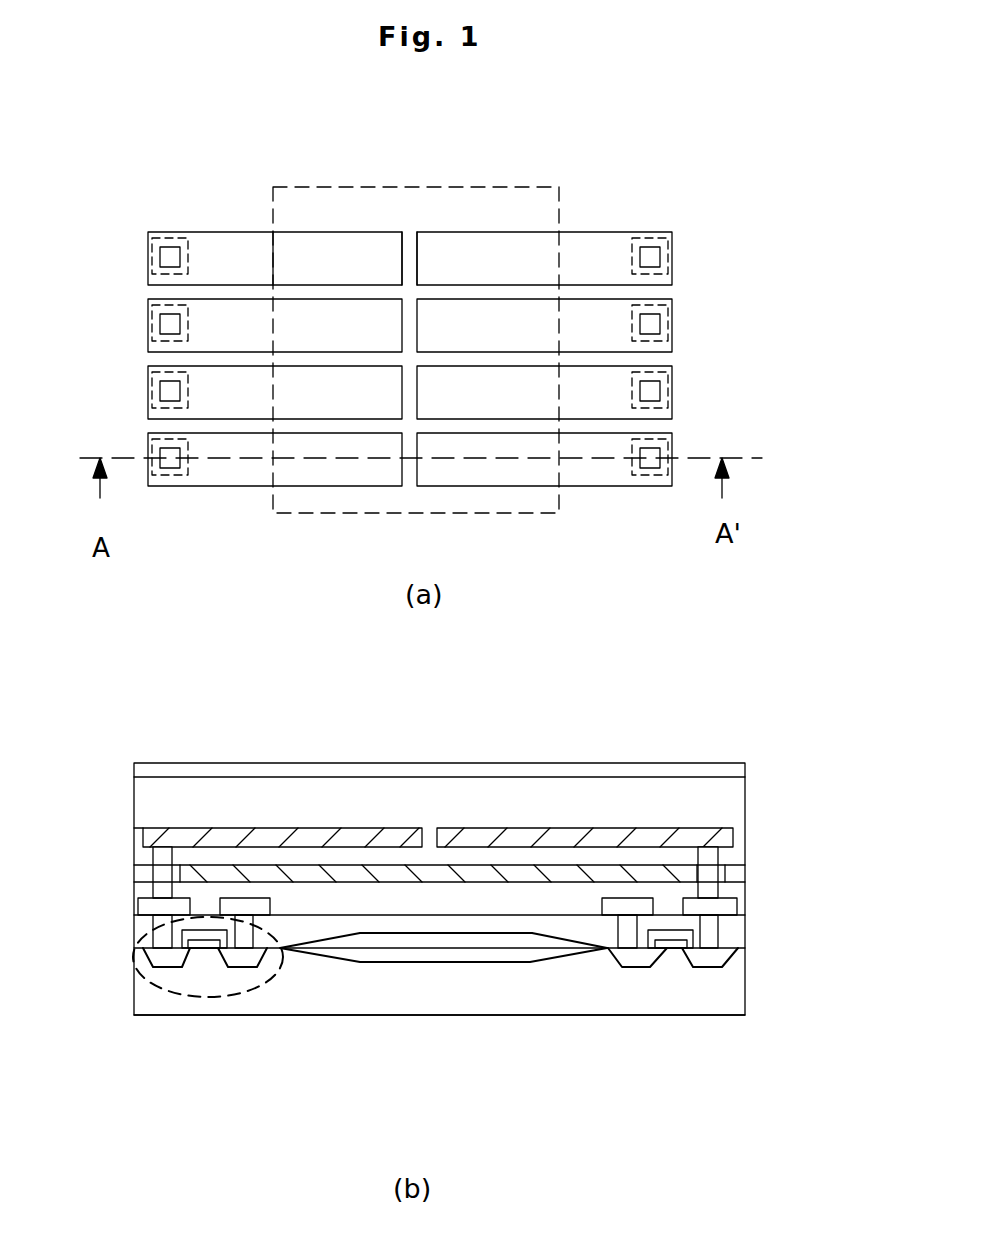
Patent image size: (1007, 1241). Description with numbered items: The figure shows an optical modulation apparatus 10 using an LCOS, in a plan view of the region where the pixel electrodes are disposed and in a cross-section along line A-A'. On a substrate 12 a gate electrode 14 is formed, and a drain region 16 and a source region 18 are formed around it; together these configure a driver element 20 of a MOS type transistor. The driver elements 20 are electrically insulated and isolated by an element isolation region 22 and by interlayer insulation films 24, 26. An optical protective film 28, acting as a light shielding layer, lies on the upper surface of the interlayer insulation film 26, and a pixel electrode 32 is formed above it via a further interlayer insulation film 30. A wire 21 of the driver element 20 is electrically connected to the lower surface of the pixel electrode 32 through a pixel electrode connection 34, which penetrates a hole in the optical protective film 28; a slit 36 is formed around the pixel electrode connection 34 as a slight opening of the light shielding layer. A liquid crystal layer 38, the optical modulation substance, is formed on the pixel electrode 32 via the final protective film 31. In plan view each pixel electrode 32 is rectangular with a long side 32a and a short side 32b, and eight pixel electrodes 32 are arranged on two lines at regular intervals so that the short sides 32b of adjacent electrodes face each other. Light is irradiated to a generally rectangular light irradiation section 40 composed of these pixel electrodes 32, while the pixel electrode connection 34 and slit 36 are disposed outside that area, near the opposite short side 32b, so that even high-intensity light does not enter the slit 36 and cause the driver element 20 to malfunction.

The optical modulation apparatus 10 is at (690, 144).
The substrate 12 is at (547, 993).
The gate electrode 14 is at (207, 942).
The drain region 16 is at (237, 960).
The source region 18 is at (168, 958).
The driver element 20 is at (188, 1012).
The wire 21 is at (152, 905).
The element isolation region 22 is at (457, 950).
The interlayer insulation film 24 is at (413, 925).
The interlayer insulation film 26 is at (357, 900).
The optical protective film 28 is at (362, 877).
The interlayer insulation film 30 is at (295, 857).
The final protective film 31 is at (715, 802).
The pixel electrode 32 is at (227, 247).
The long side 32a is at (258, 230).
The short side 32b is at (402, 257).
The pixel electrode connection 34 is at (172, 257).
The slit 36 is at (155, 270).
The liquid crystal layer 38 is at (713, 768).
The light irradiation section 40 is at (447, 187).